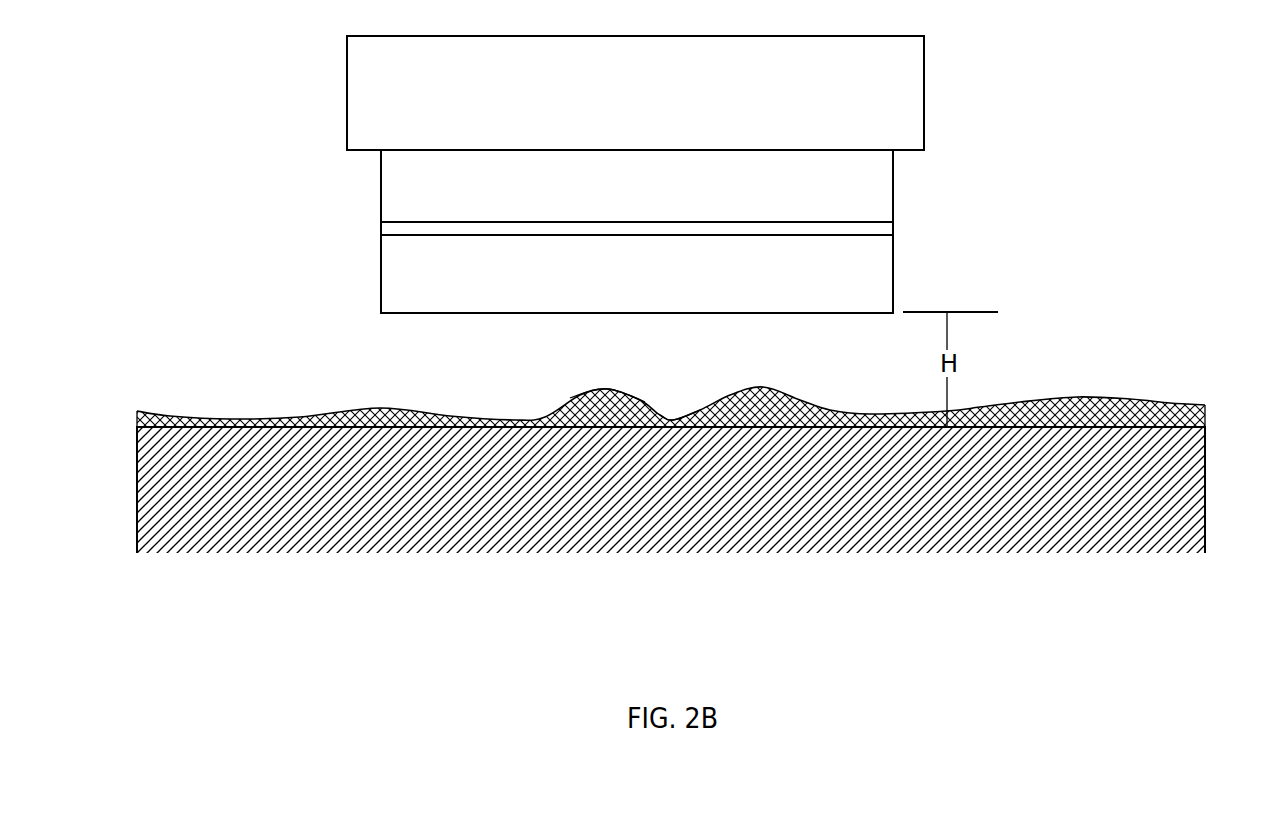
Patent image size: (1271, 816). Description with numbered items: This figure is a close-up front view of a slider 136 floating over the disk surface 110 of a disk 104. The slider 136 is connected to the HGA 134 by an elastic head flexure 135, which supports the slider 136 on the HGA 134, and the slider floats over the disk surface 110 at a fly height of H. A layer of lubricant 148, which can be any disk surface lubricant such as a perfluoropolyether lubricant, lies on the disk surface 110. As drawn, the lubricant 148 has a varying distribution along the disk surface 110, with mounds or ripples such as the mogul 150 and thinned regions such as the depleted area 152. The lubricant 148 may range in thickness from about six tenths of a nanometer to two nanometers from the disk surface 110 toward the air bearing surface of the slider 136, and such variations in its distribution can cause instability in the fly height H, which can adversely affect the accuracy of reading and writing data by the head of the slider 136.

The HGA 134 is at (345, 90).
The elastic head flexure 135 is at (380, 197).
The slider 136 is at (380, 268).
The disk 104 is at (671, 490).
The disk surface 110 is at (137, 428).
The lubricant 148 is at (137, 411).
The mogul 150 is at (602, 391).
The depleted area 152 is at (677, 418).